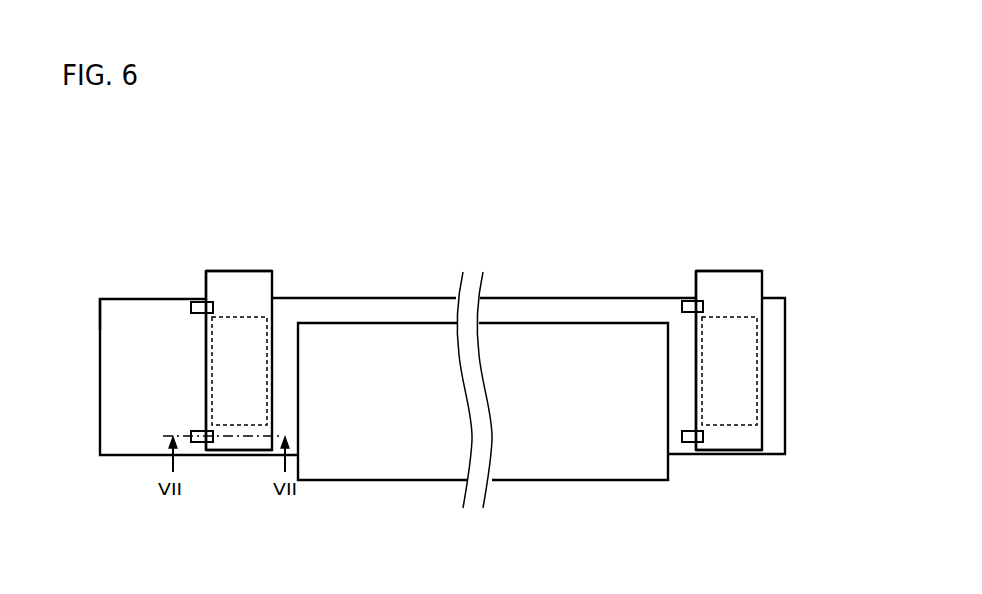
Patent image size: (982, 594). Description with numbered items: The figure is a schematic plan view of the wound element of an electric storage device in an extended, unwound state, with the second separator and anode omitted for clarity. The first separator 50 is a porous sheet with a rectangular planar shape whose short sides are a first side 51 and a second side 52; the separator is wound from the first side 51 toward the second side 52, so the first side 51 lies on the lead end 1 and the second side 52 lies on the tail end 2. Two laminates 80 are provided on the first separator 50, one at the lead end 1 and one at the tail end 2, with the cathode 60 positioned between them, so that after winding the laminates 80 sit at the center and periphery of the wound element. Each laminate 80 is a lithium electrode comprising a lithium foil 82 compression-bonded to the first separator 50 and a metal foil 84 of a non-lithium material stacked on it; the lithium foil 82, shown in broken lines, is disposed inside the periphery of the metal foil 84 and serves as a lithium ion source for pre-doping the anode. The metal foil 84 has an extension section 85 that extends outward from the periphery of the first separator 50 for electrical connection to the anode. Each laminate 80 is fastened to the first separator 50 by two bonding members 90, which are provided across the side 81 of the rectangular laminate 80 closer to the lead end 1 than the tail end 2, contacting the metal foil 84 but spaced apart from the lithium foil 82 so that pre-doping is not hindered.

The lead end 1 is at (72, 388).
The tail end 2 is at (834, 386).
The first separator 50 is at (123, 430).
The first side 51 is at (100, 318).
The second side 52 is at (785, 430).
The cathode 60 is at (393, 417).
The laminate 80 is at (282, 257).
The side of the laminate 81 is at (206, 283).
The lithium foil 82 is at (245, 410).
The metal foil 84 is at (225, 443).
The extension section 85 is at (258, 285).
The bonding member 90 is at (203, 307).